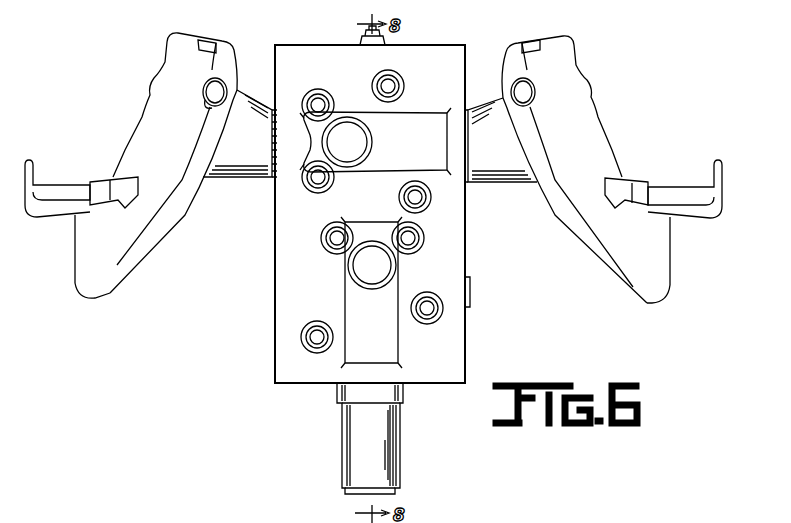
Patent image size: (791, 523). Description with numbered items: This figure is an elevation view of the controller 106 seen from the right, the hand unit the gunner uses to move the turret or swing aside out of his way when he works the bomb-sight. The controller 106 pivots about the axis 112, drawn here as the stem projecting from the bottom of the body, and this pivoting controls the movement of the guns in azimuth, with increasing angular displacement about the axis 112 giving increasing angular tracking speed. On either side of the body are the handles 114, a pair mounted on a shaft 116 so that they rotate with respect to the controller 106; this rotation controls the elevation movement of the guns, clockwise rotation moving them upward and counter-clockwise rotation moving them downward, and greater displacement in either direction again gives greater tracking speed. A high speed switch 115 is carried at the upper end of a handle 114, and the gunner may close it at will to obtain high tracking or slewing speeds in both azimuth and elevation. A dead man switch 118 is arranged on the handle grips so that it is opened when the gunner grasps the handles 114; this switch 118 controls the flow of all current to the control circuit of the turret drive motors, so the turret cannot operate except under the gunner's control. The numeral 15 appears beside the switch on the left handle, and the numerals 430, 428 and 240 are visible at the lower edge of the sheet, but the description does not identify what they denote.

The controller 106 is at (466, 330).
The pivot axis 112 is at (400, 440).
The handles 114 is at (117, 265).
The high speed switch 115 is at (527, 92).
The pivot bolt 15 is at (213, 92).
The shaft 116 is at (247, 163).
The dead man switch 118 is at (700, 218).
The element 430 is at (156, 515).
The element 428 is at (278, 515).
The element 240 is at (324, 518).